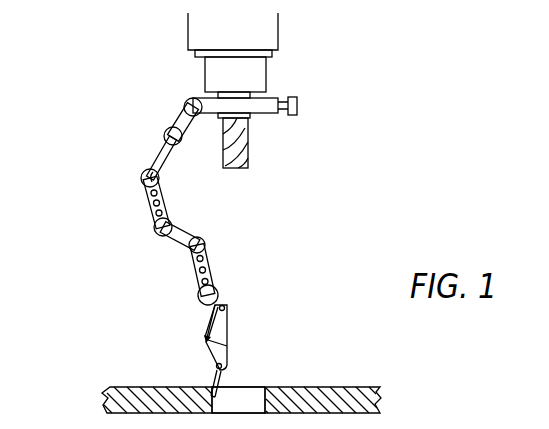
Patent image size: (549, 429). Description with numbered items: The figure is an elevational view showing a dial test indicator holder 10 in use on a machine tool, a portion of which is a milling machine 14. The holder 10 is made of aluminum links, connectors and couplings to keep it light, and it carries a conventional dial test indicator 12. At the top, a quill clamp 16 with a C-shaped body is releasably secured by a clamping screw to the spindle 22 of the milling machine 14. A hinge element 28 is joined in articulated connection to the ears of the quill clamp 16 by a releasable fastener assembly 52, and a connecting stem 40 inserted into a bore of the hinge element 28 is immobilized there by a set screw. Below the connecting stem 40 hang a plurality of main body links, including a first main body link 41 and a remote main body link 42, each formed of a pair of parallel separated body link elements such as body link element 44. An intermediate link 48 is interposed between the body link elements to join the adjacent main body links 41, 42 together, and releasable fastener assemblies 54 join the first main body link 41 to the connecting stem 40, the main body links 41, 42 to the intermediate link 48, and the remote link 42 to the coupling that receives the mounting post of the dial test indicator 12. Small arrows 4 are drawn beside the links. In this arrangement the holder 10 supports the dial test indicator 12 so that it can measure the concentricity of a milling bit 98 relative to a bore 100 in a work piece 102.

The dial test indicator holder 10 is at (102, 189).
The dial test indicator 12 is at (199, 324).
The milling machine 14 is at (294, 82).
The quill clamp 16 is at (272, 123).
The spindle 22 is at (248, 95).
The hinge element 28 is at (173, 107).
The connecting stem 40 is at (173, 154).
The first main body link 41 is at (150, 213).
The remote main body link 42 is at (214, 274).
The body link element 44 is at (210, 258).
The intermediate link 48 is at (181, 233).
The releasable fastener assembly 52 is at (193, 98).
The releasable fastener assembly 54 is at (141, 177).
The axis direction arrow 4 is at (162, 165).
The milling bit 98 is at (248, 150).
The bore 100 is at (252, 387).
The work piece 102 is at (317, 387).